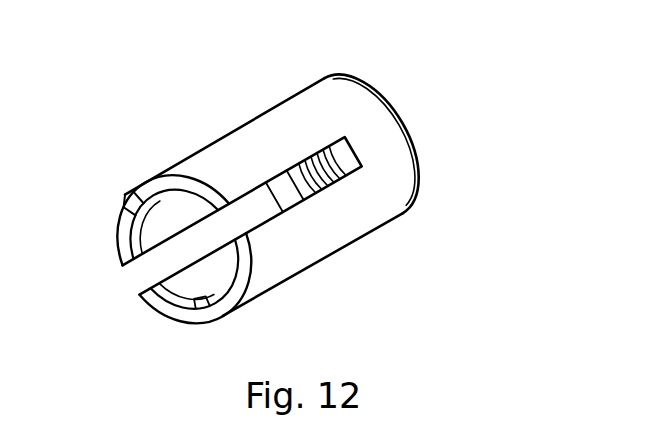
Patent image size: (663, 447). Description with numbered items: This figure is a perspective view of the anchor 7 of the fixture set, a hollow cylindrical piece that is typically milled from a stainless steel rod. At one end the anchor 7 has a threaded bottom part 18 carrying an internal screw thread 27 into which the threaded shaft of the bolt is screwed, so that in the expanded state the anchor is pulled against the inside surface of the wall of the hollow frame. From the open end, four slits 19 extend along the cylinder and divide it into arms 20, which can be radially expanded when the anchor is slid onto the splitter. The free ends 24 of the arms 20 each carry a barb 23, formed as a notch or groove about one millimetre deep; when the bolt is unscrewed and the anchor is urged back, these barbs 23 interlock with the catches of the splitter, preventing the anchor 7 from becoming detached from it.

The anchor 7 is at (350, 288).
The threaded bottom part 18 is at (363, 120).
The slit 19 is at (187, 248).
The arm 20 is at (220, 172).
The barb 23 is at (130, 195).
The free end 24 is at (117, 214).
The internal screw thread 27 is at (307, 157).